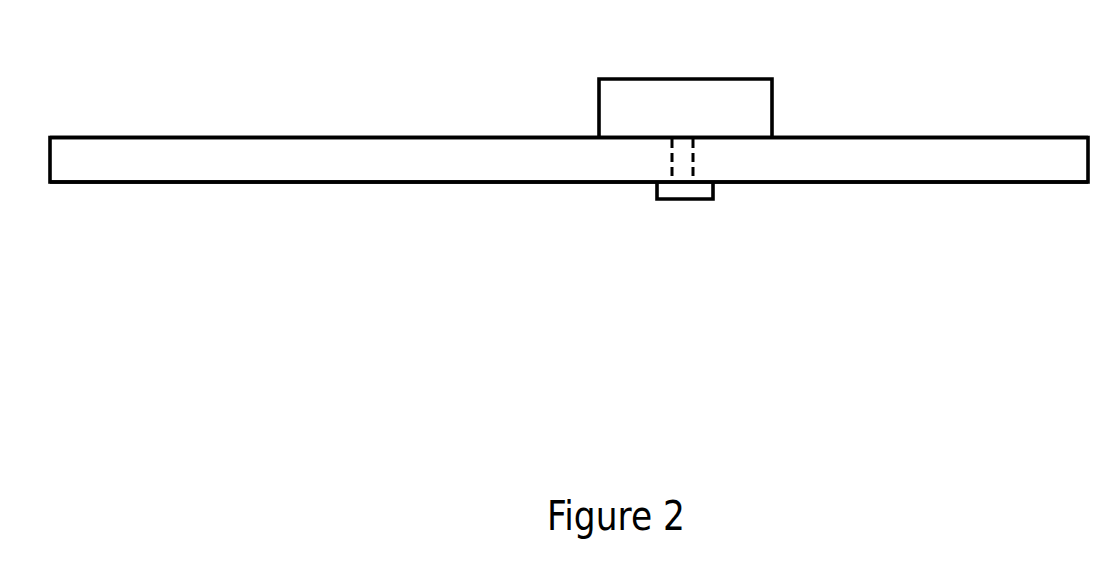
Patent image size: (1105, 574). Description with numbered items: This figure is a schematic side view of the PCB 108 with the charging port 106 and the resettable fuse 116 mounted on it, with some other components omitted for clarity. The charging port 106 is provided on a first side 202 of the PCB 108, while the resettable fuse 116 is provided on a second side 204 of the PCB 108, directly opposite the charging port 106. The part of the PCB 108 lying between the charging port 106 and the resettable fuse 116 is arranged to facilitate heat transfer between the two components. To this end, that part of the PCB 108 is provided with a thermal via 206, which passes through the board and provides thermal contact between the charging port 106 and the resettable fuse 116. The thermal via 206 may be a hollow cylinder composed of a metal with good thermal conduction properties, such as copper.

The PCB 108 is at (282, 155).
The first side 202 is at (933, 137).
The second side 204 is at (1017, 183).
The charging port 106 is at (745, 88).
The thermal via 206 is at (670, 160).
The resettable fuse 116 is at (685, 200).